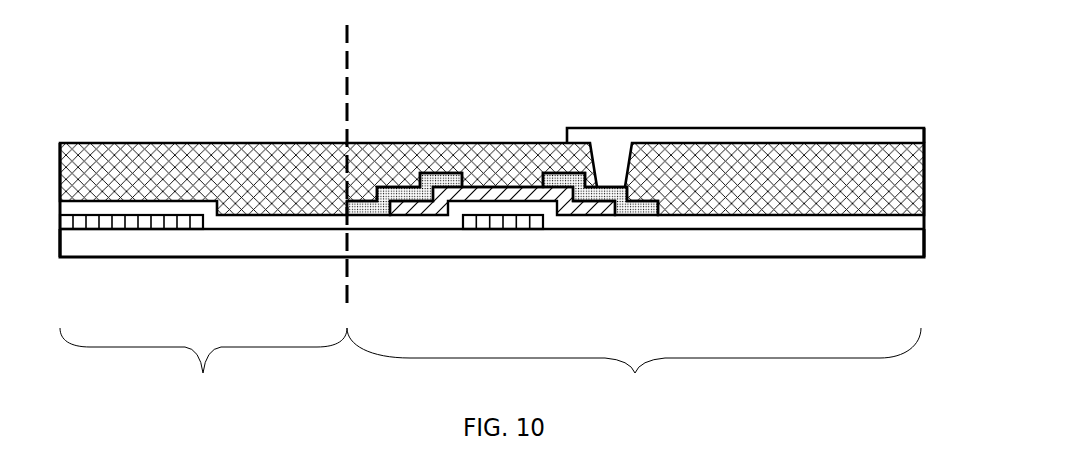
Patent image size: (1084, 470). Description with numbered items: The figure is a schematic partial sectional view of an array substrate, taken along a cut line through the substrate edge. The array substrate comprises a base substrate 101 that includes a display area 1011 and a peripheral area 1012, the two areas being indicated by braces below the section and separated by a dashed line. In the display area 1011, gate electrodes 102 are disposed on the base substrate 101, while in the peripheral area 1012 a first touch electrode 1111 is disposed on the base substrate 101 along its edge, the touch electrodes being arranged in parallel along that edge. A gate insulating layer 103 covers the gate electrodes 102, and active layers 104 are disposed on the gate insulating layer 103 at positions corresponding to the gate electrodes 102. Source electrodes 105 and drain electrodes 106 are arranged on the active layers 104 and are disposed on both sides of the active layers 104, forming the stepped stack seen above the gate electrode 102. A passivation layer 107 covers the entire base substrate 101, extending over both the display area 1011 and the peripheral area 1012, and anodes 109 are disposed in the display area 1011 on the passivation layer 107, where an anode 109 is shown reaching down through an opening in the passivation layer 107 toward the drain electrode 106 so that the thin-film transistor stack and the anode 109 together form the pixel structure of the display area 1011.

The base substrate 101 is at (822, 243).
The gate electrode 102 is at (517, 222).
The gate insulating layer 103 is at (720, 223).
The active layer 104 is at (493, 142).
The source electrode 105 is at (387, 217).
The drain electrode 106 is at (632, 216).
The passivation layer 107 is at (255, 142).
The anode 109 is at (753, 141).
The first touch electrode 1111 is at (162, 222).
The display area 1011 is at (634, 365).
The peripheral area 1012 is at (203, 365).